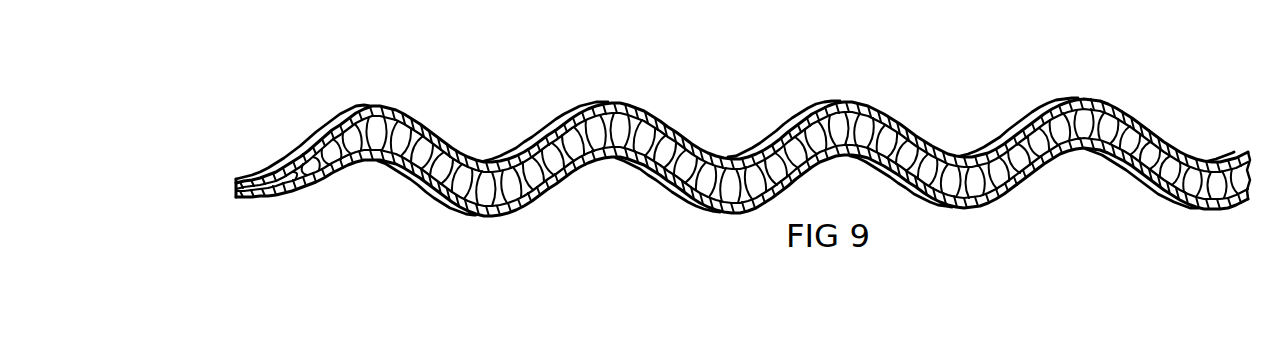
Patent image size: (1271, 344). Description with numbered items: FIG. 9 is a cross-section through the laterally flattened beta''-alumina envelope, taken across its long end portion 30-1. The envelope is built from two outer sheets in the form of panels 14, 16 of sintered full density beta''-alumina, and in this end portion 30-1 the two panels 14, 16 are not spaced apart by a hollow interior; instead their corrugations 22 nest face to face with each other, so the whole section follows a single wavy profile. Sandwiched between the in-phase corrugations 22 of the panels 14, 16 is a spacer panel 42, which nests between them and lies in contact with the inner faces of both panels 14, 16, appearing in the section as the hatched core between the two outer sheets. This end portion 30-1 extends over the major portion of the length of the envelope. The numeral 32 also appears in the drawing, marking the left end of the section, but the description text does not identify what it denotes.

The panel 14 is at (1072, 105).
The panel 16 is at (1128, 147).
The corrugations 22 is at (527, 117).
The end portion 30-1 is at (1186, 106).
The panel end 32 is at (200, 210).
The spacer panel 42 is at (874, 123).